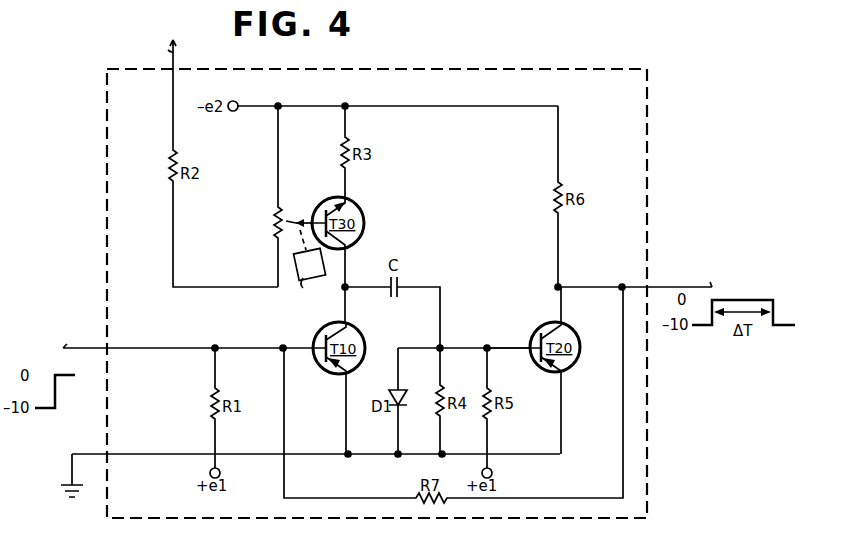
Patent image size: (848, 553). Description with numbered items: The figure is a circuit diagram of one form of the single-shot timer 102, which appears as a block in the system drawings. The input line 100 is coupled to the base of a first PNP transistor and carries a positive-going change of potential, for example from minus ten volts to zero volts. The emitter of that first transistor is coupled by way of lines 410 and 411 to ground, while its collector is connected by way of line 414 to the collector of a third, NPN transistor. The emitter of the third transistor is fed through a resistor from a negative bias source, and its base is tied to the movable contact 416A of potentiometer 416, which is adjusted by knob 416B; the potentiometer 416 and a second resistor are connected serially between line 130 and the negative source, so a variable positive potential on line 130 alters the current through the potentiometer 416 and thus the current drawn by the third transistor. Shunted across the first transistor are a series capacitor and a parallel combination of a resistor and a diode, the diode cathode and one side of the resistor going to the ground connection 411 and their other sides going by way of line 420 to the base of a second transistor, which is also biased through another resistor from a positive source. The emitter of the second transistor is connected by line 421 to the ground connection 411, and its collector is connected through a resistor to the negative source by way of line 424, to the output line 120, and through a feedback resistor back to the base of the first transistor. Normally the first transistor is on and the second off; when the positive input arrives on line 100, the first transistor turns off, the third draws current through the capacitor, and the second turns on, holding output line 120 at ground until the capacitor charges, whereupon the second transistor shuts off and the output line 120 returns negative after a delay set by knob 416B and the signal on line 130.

The input line 100 is at (88, 348).
The single-shot timer 102 is at (107, 128).
The output line 120 is at (670, 287).
The line 130 is at (172, 52).
The line 410 is at (346, 408).
The ground connection 411 is at (163, 457).
The line 414 is at (348, 305).
The potentiometer 416 is at (272, 215).
The movable contact 416A is at (295, 216).
The knob 416B is at (305, 271).
The line 420 is at (468, 348).
The line 421 is at (561, 404).
The line 424 is at (447, 106).